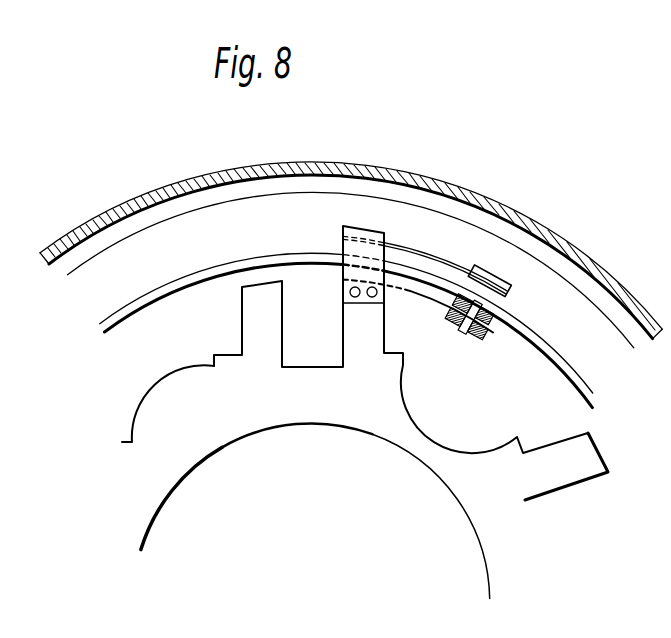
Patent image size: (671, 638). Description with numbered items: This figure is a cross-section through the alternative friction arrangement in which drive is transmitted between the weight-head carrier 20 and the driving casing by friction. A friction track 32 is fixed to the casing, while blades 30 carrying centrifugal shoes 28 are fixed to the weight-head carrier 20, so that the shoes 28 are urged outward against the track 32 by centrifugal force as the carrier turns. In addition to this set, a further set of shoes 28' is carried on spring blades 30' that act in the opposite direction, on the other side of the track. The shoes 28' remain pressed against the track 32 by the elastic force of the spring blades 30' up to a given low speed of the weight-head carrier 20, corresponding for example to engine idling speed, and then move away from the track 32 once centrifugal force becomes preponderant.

The weight-head carrier 20 is at (428, 470).
The centrifugal shoe 28 is at (482, 331).
The further set of shoes 28' is at (517, 290).
The blade 30 is at (418, 313).
The spring blade 30' is at (425, 255).
The friction track 32 is at (150, 294).